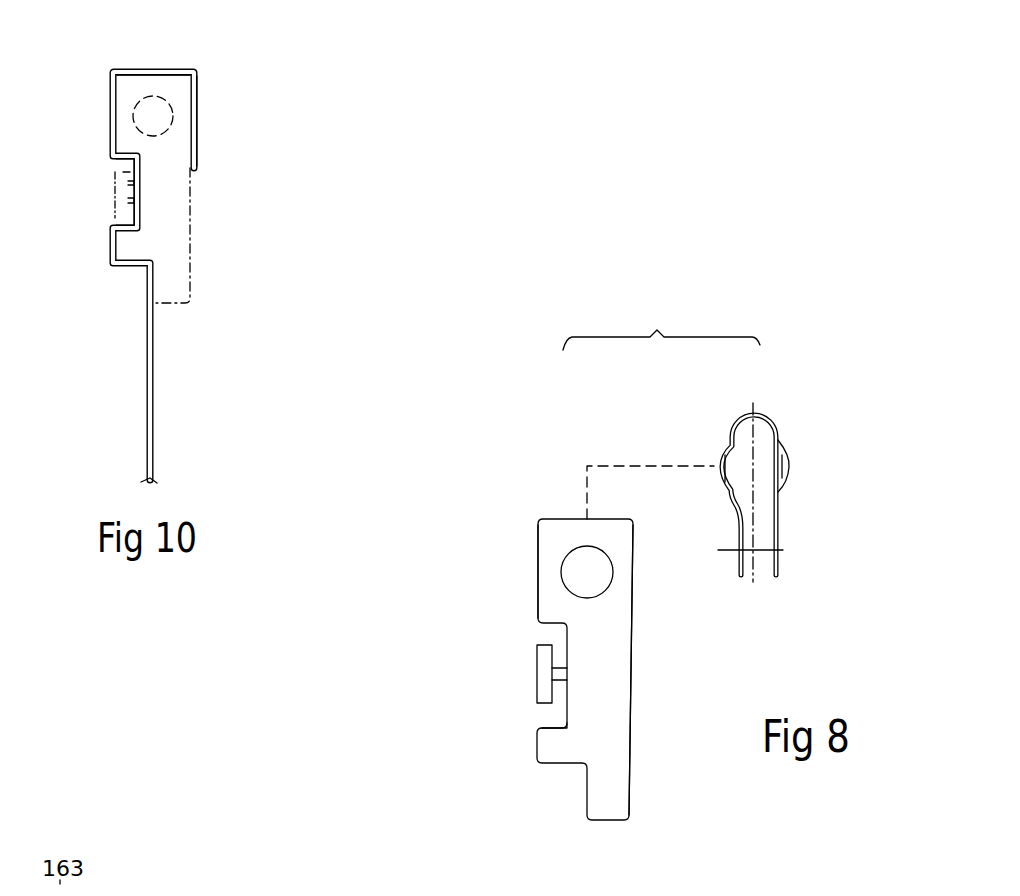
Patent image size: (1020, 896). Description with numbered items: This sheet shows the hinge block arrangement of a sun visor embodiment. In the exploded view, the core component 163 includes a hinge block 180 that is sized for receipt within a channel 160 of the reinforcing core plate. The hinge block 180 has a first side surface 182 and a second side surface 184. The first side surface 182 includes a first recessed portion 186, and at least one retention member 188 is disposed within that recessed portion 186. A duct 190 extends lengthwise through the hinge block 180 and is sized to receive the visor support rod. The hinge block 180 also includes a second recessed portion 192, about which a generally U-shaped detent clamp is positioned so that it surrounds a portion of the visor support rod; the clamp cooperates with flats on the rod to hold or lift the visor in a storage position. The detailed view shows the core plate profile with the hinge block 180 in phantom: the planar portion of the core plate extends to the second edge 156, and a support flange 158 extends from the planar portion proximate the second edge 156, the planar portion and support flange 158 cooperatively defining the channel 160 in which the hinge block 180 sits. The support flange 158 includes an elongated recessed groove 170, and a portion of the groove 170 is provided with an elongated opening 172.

In FIG. 10, the second edge 156 is at (167, 67).
In FIG. 10, the support flange 158 is at (197, 117).
In FIG. 10, the channel 160 is at (178, 87).
In FIG. 8, the core component 163 is at (661, 322).
In FIG. 10, the elongated recessed groove 170 is at (130, 222).
In FIG. 10, the elongated opening 172 is at (137, 200).
In FIG. 10, the hinge block 180 is at (192, 270).
In FIG. 8, the hinge block 180 is at (637, 650).
In FIG. 8, the first side surface 182 is at (537, 605).
In FIG. 8, the second side surface 184 is at (633, 602).
In FIG. 8, the first recessed portion 186 is at (562, 722).
In FIG. 8, the retention member 188 is at (533, 675).
In FIG. 8, the duct 190 is at (583, 573).
In FIG. 8, the second recessed portion 192 is at (775, 410).